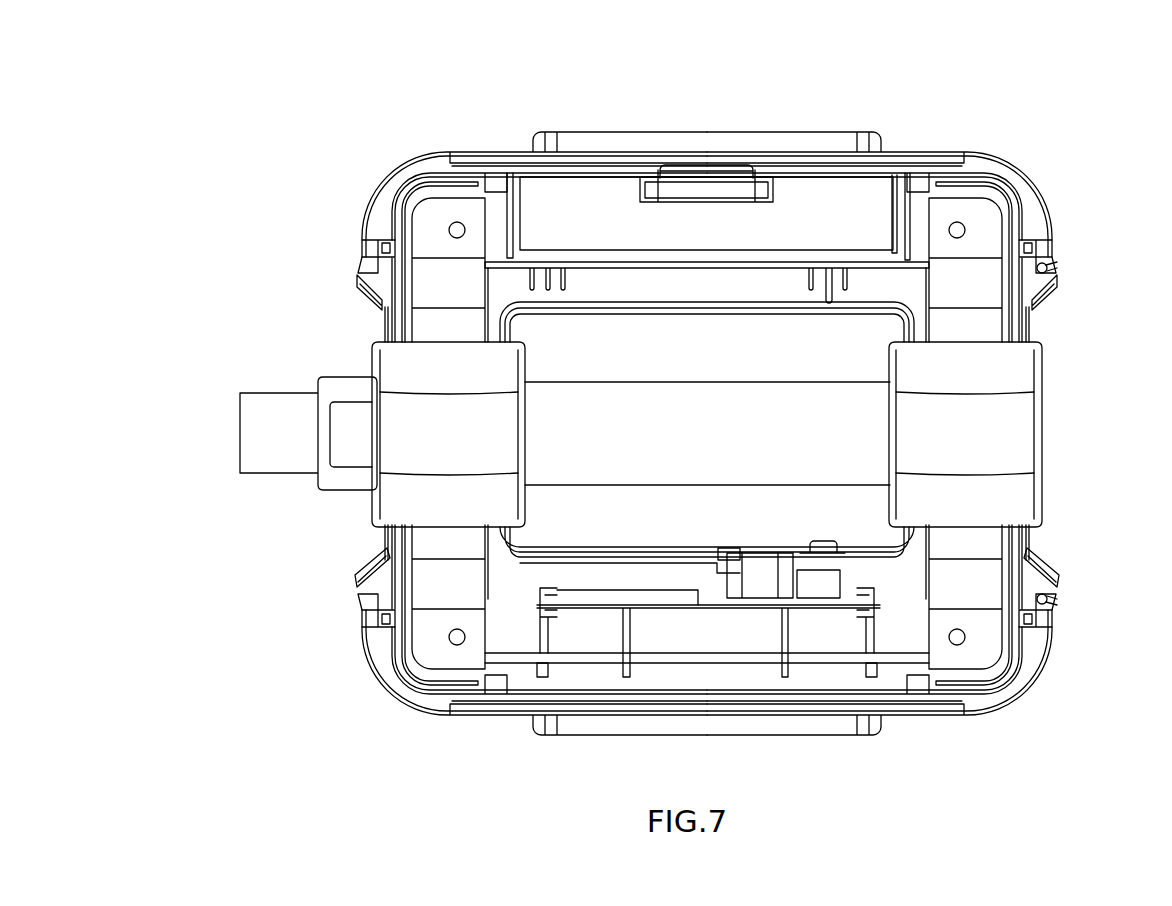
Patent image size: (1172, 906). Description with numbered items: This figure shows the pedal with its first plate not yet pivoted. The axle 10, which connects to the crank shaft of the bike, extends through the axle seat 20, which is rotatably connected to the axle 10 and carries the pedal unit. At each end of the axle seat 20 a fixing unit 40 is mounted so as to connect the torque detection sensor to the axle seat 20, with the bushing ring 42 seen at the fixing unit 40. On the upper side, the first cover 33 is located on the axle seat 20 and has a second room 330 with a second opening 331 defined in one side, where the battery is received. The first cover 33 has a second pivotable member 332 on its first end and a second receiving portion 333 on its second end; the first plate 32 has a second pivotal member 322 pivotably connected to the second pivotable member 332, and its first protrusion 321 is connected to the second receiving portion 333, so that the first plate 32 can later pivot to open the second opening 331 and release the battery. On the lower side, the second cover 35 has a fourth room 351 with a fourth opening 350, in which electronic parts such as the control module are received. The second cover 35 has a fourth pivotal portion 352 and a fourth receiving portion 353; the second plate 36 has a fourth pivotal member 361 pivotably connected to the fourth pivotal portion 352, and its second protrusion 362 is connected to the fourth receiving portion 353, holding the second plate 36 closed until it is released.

The axle 10 is at (258, 440).
The axle seat 20 is at (703, 384).
The first plate 32 is at (436, 161).
The first cover 33 is at (586, 212).
The second room 330 is at (810, 218).
The second opening 331 is at (878, 193).
The first protrusion 321 is at (378, 244).
The second receiving portion 333 is at (368, 283).
The second pivotable member 332 is at (1050, 264).
The second pivotal member 322 is at (1052, 270).
The fixing unit 40 is at (487, 406).
The bushing ring 42 is at (412, 406).
The second plate 36 is at (398, 686).
The fourth receiving portion 353 is at (358, 601).
The second protrusion 362 is at (382, 622).
The fourth pivotal portion 352 is at (1050, 603).
The fourth pivotal member 361 is at (1052, 608).
The second cover 35 is at (900, 636).
The fourth opening 350 is at (750, 632).
The fourth room 351 is at (697, 636).